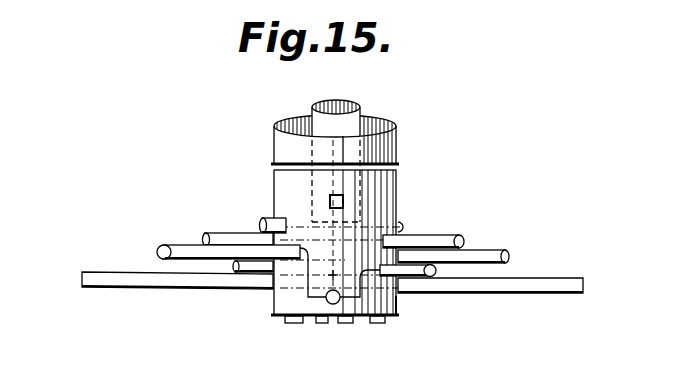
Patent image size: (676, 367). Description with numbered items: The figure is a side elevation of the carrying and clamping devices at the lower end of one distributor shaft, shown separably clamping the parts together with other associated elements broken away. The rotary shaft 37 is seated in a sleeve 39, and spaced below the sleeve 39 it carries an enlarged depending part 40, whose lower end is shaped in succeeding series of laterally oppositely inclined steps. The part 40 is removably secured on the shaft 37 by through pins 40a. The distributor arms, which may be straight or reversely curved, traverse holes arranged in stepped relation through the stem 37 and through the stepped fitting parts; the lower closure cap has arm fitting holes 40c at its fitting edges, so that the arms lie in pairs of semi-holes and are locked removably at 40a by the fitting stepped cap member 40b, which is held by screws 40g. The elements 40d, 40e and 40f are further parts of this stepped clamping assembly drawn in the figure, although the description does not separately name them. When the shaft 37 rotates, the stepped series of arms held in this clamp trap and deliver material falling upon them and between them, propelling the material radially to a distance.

The rotary shaft 37 is at (360, 112).
The sleeve 39 is at (388, 143).
The enlarged depending part 40 is at (398, 191).
The through pins 40a is at (343, 199).
The stepped cap member 40b is at (396, 303).
The arm fitting holes 40c is at (294, 226).
The hole 40d is at (333, 304).
The pin 40e is at (436, 270).
The pin 40f is at (464, 242).
The screws 40g is at (376, 323).